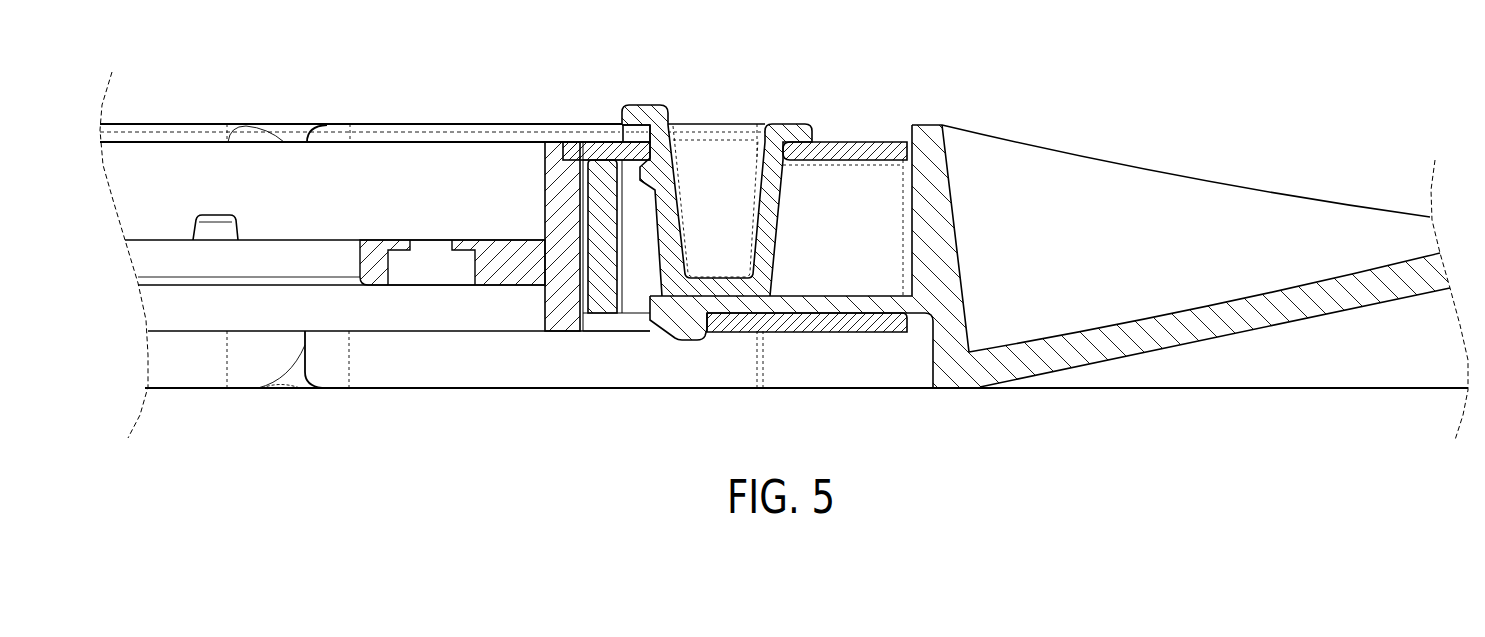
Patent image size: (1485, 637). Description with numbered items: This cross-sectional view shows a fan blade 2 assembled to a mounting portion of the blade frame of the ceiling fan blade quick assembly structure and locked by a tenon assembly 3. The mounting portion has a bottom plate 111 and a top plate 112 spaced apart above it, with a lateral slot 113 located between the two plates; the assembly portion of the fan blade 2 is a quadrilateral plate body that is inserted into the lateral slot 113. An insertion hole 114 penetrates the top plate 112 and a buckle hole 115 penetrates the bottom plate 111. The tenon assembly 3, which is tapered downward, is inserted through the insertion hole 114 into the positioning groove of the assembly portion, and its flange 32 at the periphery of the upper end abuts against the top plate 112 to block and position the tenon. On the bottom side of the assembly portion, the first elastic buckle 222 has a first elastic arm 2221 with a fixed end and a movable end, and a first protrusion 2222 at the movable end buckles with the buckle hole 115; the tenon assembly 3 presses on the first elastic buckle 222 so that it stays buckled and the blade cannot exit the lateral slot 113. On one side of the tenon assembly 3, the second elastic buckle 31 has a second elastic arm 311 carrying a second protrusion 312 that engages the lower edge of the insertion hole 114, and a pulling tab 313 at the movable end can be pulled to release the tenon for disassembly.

The fan blade 2 is at (1230, 188).
The tenon assembly 3 is at (718, 117).
The second elastic buckle 31 is at (667, 125).
The flange 32 is at (793, 135).
The bottom plate 111 is at (817, 322).
The top plate 112 is at (588, 142).
The lateral slot 113 is at (581, 204).
The insertion hole 114 is at (820, 152).
The buckle hole 115 is at (606, 331).
The first elastic buckle 222 is at (878, 306).
The second elastic arm 311 is at (657, 267).
The second protrusion 312 is at (614, 143).
The pulling tab 313 is at (647, 105).
The first elastic arm 2221 is at (763, 303).
The first protrusion 2222 is at (690, 338).